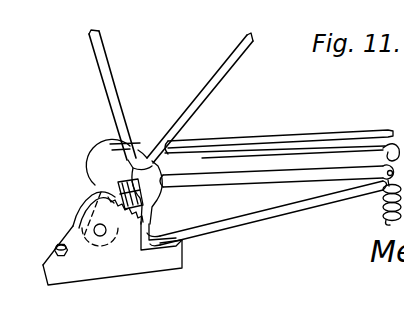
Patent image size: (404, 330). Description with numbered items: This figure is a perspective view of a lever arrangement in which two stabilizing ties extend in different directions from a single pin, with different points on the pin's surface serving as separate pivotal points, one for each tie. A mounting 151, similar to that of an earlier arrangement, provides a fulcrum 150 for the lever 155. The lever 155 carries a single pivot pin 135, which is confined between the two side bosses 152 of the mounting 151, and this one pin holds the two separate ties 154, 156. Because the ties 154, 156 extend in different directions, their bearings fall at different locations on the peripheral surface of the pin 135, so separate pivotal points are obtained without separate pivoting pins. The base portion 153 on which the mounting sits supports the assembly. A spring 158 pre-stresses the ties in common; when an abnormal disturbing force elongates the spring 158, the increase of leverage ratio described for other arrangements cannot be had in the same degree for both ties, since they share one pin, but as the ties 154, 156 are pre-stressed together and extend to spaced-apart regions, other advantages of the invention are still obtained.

The pivot pin 135 is at (117, 180).
The fulcrum 150 is at (95, 228).
The mounting 151 is at (143, 261).
The side bosses 152 is at (113, 150).
The base 153 is at (120, 234).
The tie 154 is at (109, 92).
The lever 155 is at (270, 205).
The tie 156 is at (214, 91).
The spring 158 is at (383, 206).